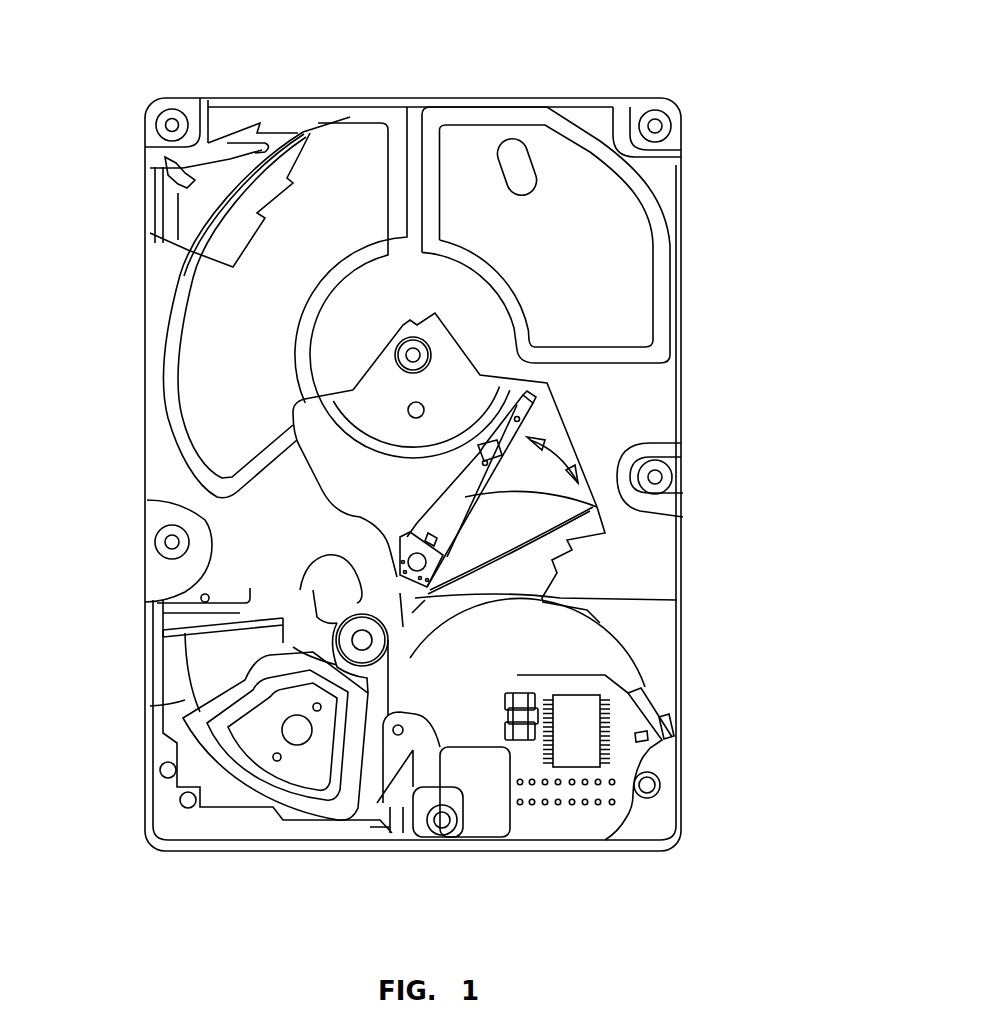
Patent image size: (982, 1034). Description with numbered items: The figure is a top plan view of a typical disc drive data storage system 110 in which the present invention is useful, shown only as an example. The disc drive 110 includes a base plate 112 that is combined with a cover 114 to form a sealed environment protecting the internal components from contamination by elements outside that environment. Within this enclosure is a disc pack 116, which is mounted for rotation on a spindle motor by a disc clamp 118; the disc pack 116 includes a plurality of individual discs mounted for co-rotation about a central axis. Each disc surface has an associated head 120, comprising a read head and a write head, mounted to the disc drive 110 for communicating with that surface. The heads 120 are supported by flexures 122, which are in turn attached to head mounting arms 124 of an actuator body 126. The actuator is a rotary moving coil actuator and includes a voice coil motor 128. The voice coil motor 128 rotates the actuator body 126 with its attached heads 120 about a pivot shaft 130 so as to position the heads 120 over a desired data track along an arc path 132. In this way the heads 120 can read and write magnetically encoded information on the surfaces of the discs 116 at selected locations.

The disc drive data storage system 110 is at (127, 427).
The base plate 112 is at (680, 780).
The cover 114 is at (426, 93).
The disc pack 116 is at (573, 555).
The disc clamp 118 is at (447, 372).
The head 120 is at (553, 397).
The flexure 122 is at (590, 503).
The head mounting arm 124 is at (593, 608).
The actuator body 126 is at (340, 588).
The voice coil motor 128 is at (165, 713).
The pivot shaft 130 is at (363, 641).
The arc path 132 is at (565, 435).